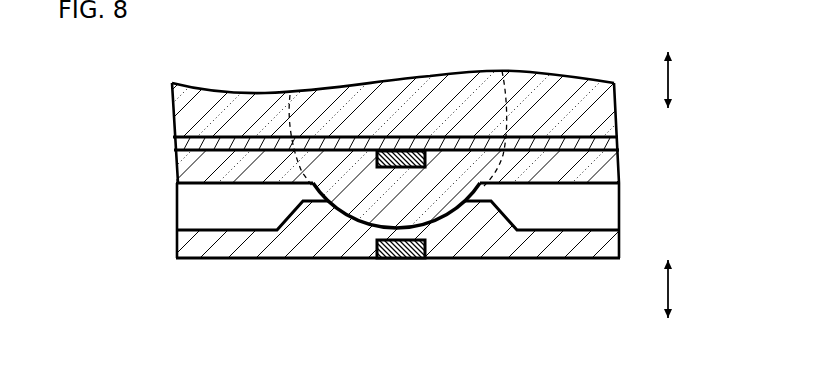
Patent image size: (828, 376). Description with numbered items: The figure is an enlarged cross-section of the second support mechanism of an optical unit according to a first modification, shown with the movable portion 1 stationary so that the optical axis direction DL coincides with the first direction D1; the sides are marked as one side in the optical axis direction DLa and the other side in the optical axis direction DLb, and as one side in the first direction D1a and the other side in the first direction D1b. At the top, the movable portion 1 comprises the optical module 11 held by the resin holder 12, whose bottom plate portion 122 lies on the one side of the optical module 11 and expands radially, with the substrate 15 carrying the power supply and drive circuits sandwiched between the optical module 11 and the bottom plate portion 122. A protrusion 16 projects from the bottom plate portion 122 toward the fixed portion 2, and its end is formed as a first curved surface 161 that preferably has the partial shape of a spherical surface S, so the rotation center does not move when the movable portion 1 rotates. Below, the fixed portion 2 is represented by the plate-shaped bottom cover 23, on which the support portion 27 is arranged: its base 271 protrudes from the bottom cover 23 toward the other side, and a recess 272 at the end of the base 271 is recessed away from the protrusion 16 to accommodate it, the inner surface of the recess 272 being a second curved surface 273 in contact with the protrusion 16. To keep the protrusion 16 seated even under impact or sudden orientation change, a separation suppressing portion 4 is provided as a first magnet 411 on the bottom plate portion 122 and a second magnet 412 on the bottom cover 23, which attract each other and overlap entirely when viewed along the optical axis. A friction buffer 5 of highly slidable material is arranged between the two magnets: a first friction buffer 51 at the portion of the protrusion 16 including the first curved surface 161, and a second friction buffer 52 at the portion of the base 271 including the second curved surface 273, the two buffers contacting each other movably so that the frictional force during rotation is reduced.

The movable portion 1 is at (233, 97).
The optical module 11 is at (185, 108).
The holder 12 is at (621, 164).
The bottom plate portion 122 is at (185, 171).
The substrate 15 is at (184, 145).
The protrusion 16 is at (462, 185).
The first curved surface 161 is at (468, 200).
The fixed portion 2 is at (218, 261).
The bottom cover 23 is at (196, 245).
The support portion 27 is at (286, 211).
The base 271 is at (492, 208).
The recess 272 is at (438, 227).
The second curved surface 273 is at (456, 215).
The separation suppressing portion 4 is at (447, 310).
The first magnet 411 is at (398, 168).
The second magnet 412 is at (400, 259).
The friction buffer 5 is at (238, 310).
The first friction buffer 51 is at (303, 204).
The second friction buffer 52 is at (378, 203).
The spherical surface S is at (516, 87).
The optical axis direction DL is at (687, 80).
The one side in the optical axis direction DLa is at (667, 125).
The other side in the optical axis direction DLb is at (666, 38).
The first direction D1 is at (688, 289).
The one side in the first direction D1a is at (667, 336).
The other side in the first direction D1b is at (667, 243).